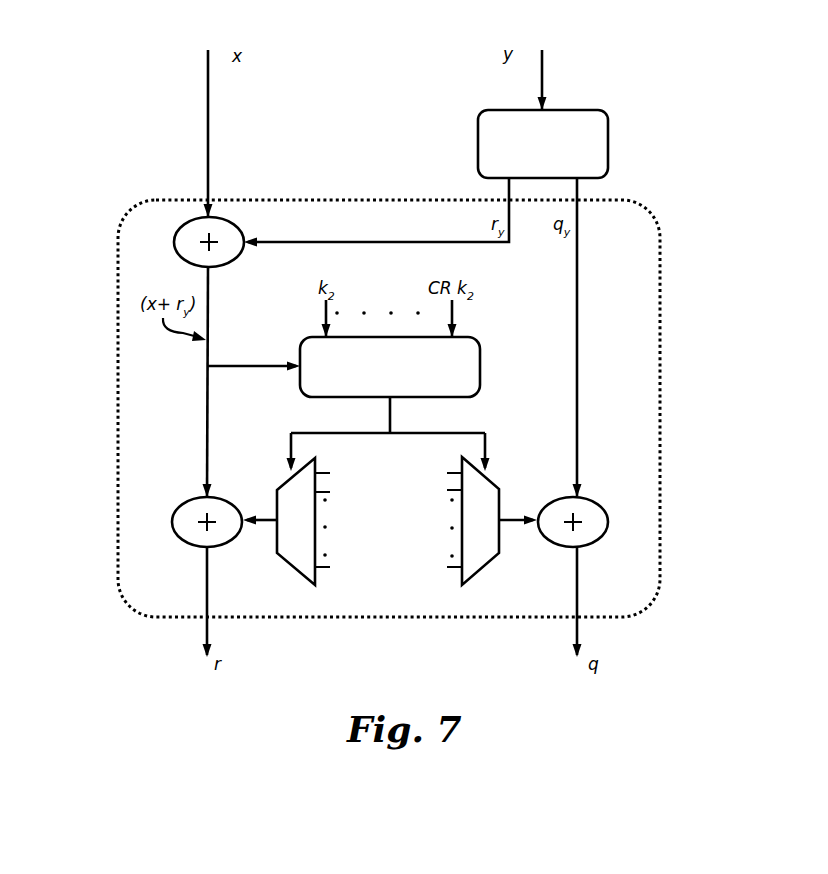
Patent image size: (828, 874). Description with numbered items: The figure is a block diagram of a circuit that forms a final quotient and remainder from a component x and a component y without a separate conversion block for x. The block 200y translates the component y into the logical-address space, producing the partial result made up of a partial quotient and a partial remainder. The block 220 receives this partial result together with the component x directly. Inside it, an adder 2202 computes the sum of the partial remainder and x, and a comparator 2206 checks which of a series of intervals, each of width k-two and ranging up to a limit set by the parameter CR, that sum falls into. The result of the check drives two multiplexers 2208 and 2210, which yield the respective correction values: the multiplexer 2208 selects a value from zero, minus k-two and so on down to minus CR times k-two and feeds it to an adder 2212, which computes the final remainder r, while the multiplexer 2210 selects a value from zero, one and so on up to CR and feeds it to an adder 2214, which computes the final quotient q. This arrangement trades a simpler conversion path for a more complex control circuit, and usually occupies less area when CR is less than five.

The block 200y is at (590, 109).
The block 220 is at (640, 206).
The adder 2202 is at (182, 226).
The comparator 2206 is at (478, 336).
The multiplexer 2208 is at (297, 571).
The multiplexer 2210 is at (486, 571).
The adder 2212 is at (183, 505).
The adder 2214 is at (602, 503).